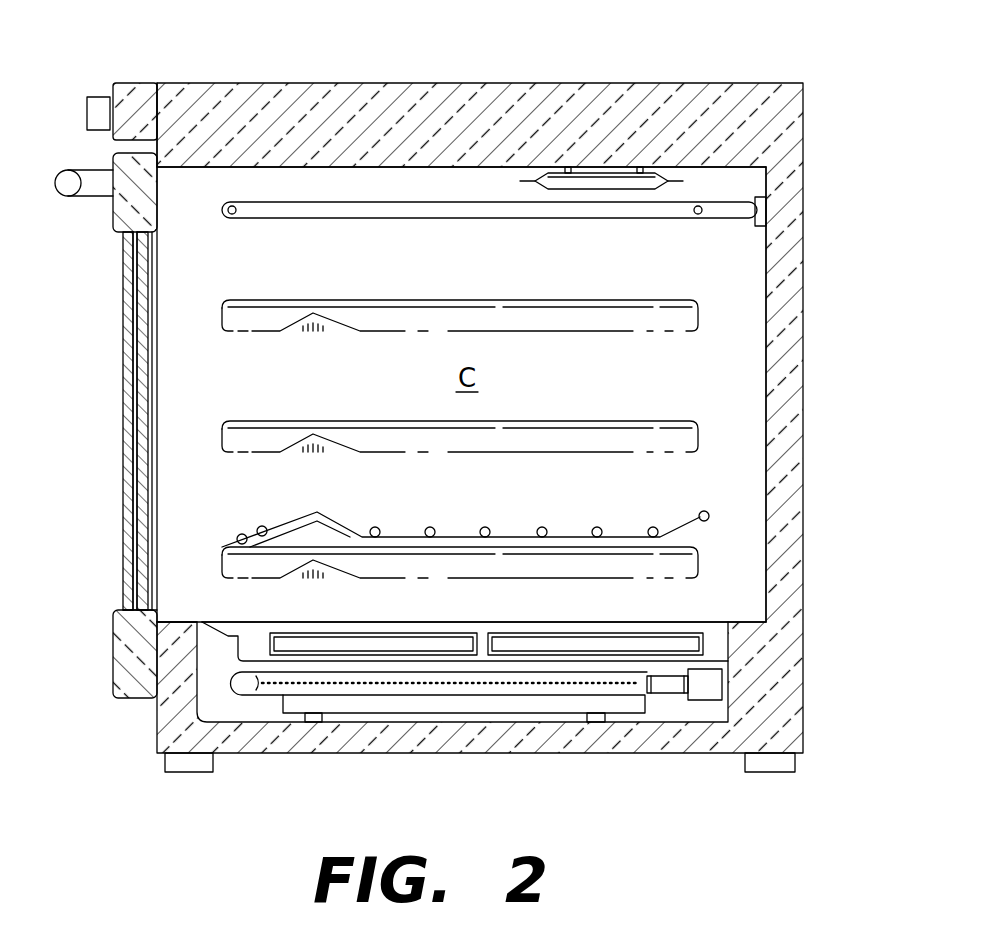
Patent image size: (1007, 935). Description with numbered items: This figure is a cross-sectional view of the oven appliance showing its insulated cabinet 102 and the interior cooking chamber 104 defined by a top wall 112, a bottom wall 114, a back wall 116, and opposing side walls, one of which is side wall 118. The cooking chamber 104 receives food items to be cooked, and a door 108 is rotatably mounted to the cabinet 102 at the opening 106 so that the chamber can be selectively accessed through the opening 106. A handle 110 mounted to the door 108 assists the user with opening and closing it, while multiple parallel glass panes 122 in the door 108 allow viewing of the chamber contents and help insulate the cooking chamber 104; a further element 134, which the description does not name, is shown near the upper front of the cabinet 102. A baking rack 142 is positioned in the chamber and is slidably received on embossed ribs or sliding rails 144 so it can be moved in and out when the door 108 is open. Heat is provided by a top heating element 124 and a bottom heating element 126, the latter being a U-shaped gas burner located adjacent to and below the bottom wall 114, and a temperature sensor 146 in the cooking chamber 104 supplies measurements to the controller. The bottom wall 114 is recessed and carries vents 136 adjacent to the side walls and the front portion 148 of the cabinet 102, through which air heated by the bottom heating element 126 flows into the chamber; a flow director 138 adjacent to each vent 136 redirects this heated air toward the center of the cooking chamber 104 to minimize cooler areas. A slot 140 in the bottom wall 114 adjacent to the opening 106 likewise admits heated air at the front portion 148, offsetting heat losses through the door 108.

The insulated cabinet 102 is at (307, 120).
The cooking chamber 104 is at (742, 283).
The opening 106 is at (152, 453).
The door 108 is at (132, 204).
The handle 110 is at (65, 182).
The top wall 112 is at (470, 174).
The bottom wall 114 is at (745, 605).
The back wall 116 is at (757, 343).
The side wall 118 is at (490, 277).
The glass panes 122 is at (158, 298).
The top heating element 124 is at (575, 208).
The bottom heating element 126 is at (242, 688).
The latch 134 is at (90, 110).
The vent 136 is at (422, 645).
The flow director 138 is at (232, 620).
The slot 140 is at (192, 603).
The baking rack 142 is at (680, 497).
The sliding rails 144 is at (560, 316).
The temperature sensor 146 is at (596, 183).
The front portion 148 is at (166, 68).